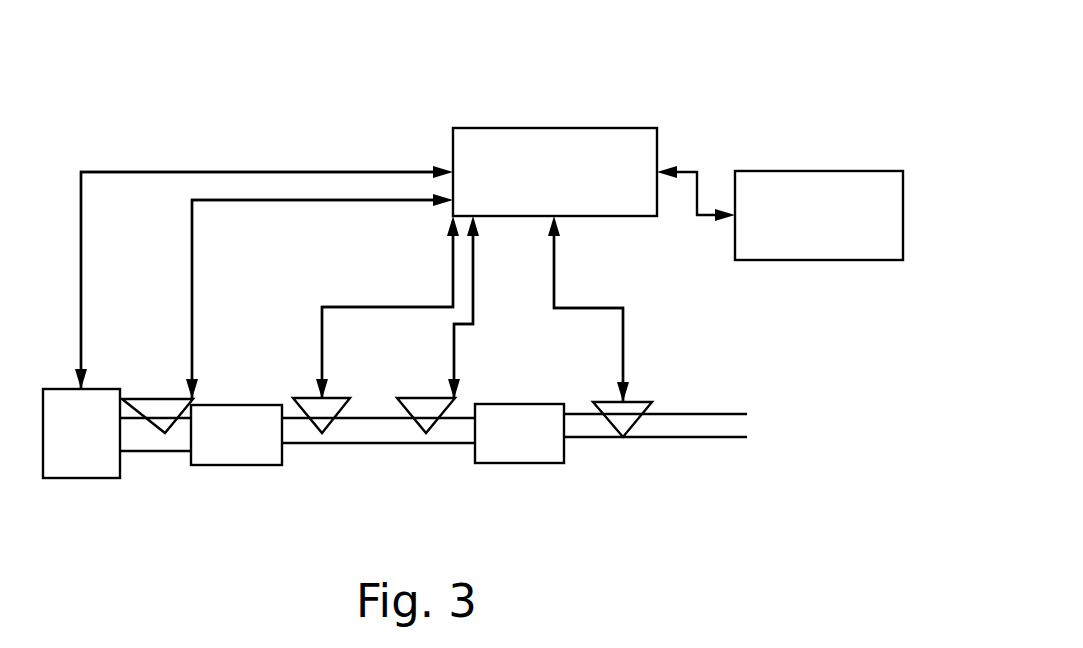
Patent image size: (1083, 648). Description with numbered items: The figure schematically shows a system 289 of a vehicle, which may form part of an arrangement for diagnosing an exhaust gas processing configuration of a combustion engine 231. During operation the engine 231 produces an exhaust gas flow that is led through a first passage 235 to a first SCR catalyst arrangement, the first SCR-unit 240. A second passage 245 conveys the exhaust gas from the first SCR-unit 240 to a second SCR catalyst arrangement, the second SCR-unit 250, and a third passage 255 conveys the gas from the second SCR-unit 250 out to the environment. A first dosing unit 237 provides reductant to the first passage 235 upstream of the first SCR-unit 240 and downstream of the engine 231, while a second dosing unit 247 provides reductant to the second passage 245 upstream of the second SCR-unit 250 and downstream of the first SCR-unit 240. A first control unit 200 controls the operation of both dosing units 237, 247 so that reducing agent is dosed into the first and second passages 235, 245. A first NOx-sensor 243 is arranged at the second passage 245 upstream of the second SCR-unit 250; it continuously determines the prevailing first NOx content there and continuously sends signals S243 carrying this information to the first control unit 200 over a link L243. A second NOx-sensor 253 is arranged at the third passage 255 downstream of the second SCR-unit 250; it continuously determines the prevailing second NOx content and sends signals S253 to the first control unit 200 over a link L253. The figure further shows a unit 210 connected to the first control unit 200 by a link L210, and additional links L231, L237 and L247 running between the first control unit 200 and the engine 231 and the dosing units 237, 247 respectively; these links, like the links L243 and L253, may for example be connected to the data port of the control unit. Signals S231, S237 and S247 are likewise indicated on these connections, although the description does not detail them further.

The system 289 is at (619, 64).
The first control unit 200 is at (574, 184).
The user interface / input device 210 is at (840, 229).
The combustion engine 231 is at (102, 447).
The first SCR catalyst arrangement 240 is at (258, 446).
The second SCR catalyst arrangement 250 is at (539, 444).
The first passage 235 is at (147, 452).
The second passage 245 is at (380, 443).
The third passage 255 is at (657, 438).
The first dosing unit 237 is at (128, 398).
The first NOx-sensor 243 is at (300, 401).
The second dosing unit 247 is at (404, 394).
The second NOx-sensor 253 is at (648, 401).
The sensor/control signal to fluid source S231 is at (264, 263).
The link L231 is at (228, 172).
The control signal to valve 237 S237 is at (319, 296).
The link L237 is at (193, 264).
The signals S243 is at (383, 307).
The link L243 is at (385, 308).
The control signal to valve 247 S247 is at (490, 307).
The link L247 is at (455, 362).
The signals S253 is at (619, 309).
The link L253 is at (622, 308).
The link L210 is at (697, 168).